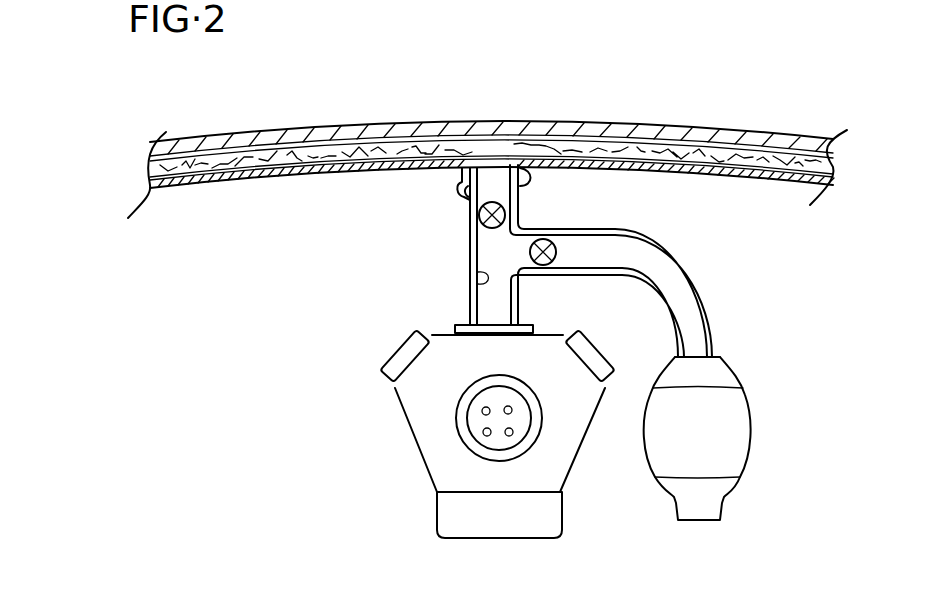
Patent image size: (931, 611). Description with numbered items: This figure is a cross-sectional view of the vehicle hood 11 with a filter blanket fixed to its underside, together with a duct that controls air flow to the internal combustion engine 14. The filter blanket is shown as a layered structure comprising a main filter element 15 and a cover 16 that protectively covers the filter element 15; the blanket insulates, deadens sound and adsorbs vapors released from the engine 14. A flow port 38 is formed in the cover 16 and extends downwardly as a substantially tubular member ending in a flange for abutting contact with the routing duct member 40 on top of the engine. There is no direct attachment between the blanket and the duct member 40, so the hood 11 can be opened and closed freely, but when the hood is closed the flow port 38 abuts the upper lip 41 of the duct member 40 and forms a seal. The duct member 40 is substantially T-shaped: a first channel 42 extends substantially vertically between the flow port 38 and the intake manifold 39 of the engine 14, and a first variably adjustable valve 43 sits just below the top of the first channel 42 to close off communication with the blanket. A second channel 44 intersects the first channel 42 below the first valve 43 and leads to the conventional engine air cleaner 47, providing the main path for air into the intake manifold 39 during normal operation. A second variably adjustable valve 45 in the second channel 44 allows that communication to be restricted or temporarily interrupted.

The vehicle hood 11 is at (628, 116).
The internal combustion engine 14 is at (400, 455).
The main filter element 15 is at (150, 172).
The cover 16 is at (203, 192).
The flow port 38 is at (437, 187).
The intake manifold 39 is at (520, 326).
The routing duct member 40 is at (455, 303).
The upper lip 41 is at (536, 189).
The first channel 42 is at (473, 273).
The first variably adjustable valve 43 is at (455, 252).
The second channel 44 is at (684, 298).
The second variably adjustable valve 45 is at (556, 250).
The engine air cleaner 47 is at (708, 444).